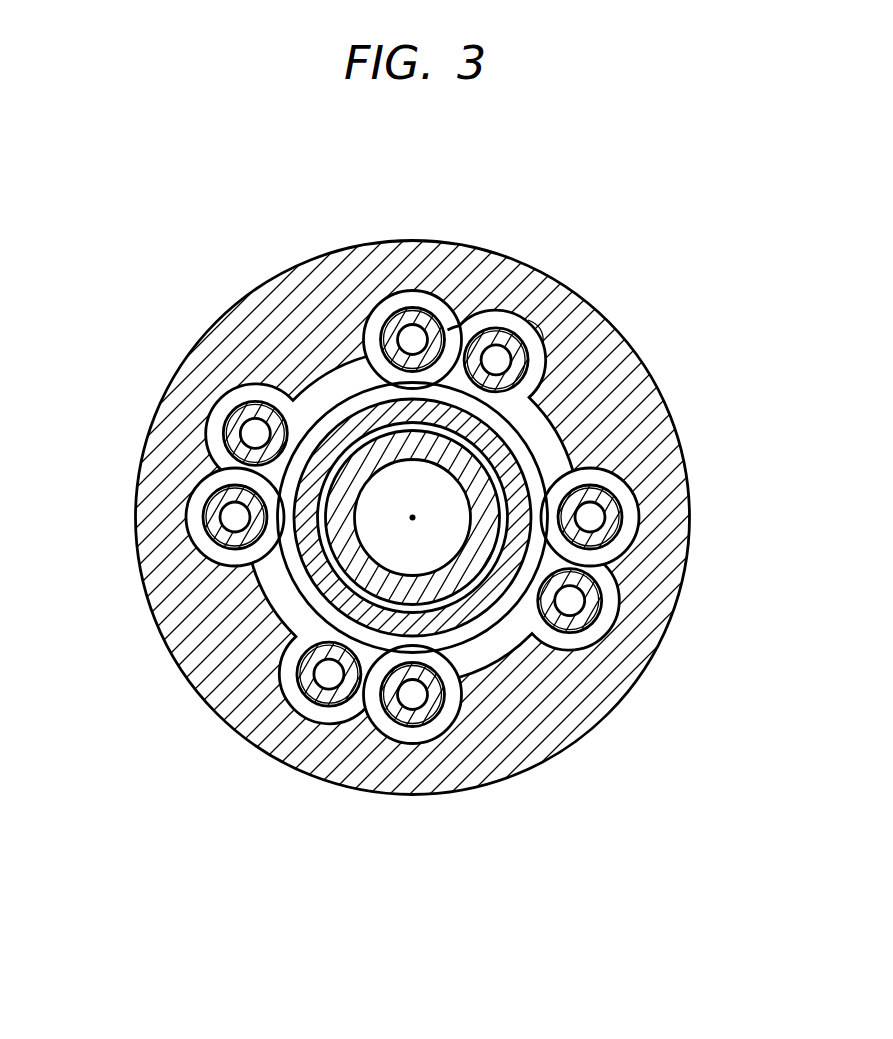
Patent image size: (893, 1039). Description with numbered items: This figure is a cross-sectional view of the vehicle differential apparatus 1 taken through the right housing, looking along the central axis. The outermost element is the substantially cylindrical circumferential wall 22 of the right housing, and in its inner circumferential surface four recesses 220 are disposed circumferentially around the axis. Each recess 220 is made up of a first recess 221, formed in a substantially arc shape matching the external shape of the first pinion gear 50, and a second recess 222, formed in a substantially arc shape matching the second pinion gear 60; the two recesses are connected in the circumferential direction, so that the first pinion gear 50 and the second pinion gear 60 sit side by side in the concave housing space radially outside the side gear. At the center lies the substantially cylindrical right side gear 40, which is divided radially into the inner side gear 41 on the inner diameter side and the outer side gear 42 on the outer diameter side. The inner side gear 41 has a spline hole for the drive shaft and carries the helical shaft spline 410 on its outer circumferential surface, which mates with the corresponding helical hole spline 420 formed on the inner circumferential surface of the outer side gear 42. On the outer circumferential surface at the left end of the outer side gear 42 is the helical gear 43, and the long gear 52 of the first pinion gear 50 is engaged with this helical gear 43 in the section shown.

The vehicle differential apparatus 1 is at (694, 297).
The circumferential wall 22 is at (628, 393).
The recess 220 is at (470, 210).
The first recess 221 is at (460, 303).
The second recess 222 is at (531, 316).
The right side gear 40 is at (104, 648).
The inner side gear 41 is at (403, 600).
The outer side gear 42 is at (337, 610).
The helical gear 43 is at (349, 386).
The first pinion gear 50 is at (396, 307).
The long gear 52 is at (196, 485).
The second pinion gear 60 is at (532, 367).
The shaft spline 410 is at (462, 593).
The hole spline 420 is at (606, 761).